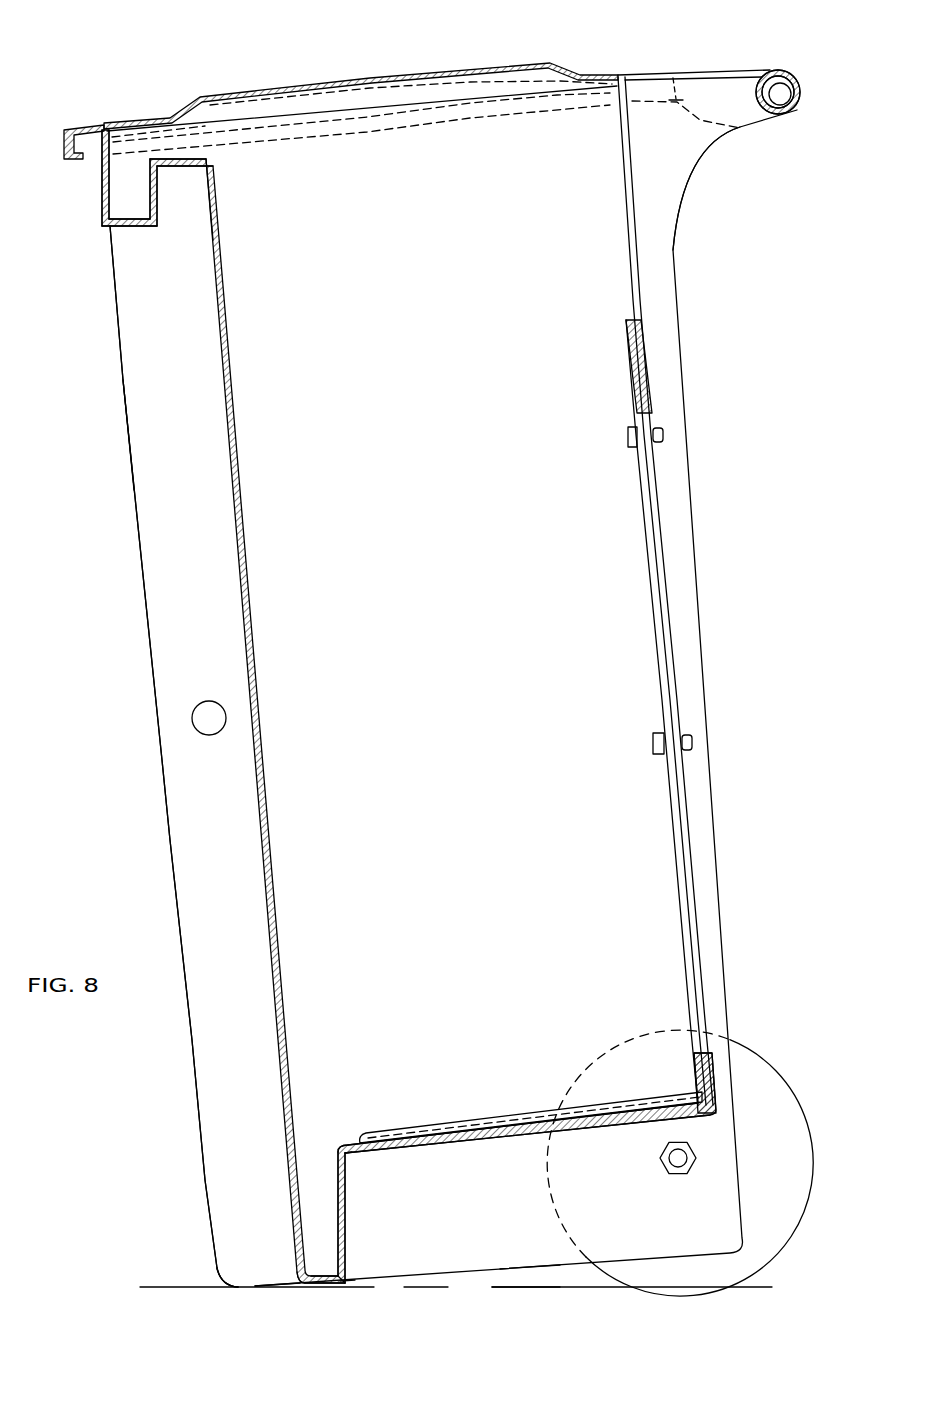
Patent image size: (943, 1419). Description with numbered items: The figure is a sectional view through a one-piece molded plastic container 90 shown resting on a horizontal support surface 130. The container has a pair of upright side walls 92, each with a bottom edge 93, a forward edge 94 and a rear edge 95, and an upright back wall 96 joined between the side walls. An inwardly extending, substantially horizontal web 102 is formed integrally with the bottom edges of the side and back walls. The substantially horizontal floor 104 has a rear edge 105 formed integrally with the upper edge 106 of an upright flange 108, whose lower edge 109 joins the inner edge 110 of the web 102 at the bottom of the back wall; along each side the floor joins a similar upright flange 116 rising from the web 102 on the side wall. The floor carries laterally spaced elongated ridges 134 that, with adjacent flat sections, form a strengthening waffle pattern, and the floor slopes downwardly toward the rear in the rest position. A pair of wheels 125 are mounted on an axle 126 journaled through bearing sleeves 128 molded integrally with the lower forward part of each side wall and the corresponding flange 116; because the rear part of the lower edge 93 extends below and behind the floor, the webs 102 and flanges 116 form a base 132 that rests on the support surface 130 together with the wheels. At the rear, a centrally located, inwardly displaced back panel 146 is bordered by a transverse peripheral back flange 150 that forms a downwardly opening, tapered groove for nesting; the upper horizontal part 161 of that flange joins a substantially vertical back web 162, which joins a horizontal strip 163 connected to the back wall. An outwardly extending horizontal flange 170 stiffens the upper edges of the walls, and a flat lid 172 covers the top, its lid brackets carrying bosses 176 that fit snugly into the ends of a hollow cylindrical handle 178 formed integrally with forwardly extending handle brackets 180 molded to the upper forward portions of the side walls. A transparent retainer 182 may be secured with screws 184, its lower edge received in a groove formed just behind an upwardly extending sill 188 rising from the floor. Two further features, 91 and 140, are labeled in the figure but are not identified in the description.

The container 90 is at (163, 877).
The lower corner 91 is at (306, 1272).
The side wall 92 is at (271, 1271).
The bottom edge 93 is at (452, 1282).
The forward edge 94 is at (721, 915).
The rear edge 95 is at (105, 197).
The back wall 96 is at (133, 572).
The web 102 is at (330, 1283).
The floor 104 is at (417, 1148).
The rear edge 105 is at (340, 1150).
The upper edge 106 is at (338, 1155).
The upright flange 108 is at (346, 1200).
The lower edge 109 is at (344, 1272).
The inner edge 110 is at (343, 1285).
The upright flange 116 is at (530, 1253).
The wheels 125 is at (760, 1062).
The axle 126 is at (683, 1173).
The bearing sleeves 128 is at (688, 1150).
The support surface 130 is at (195, 1287).
The base 132 is at (231, 1290).
The elongated ridges 134 is at (427, 1118).
The inner wall 140 is at (244, 535).
The back panel 146 is at (275, 242).
The back flange 150 is at (163, 401).
The upper part of back flange 161 is at (180, 166).
The back web 162 is at (153, 195).
The horizontal strip 163 is at (135, 238).
The horizontal flange 170 is at (68, 152).
The lid 172 is at (445, 67).
The boss 176 is at (696, 72).
The handle 178 is at (793, 114).
The handle brackets 180 is at (740, 128).
The transparent retainer 182 is at (630, 418).
The screws 184 is at (665, 434).
The sill 188 is at (715, 1092).